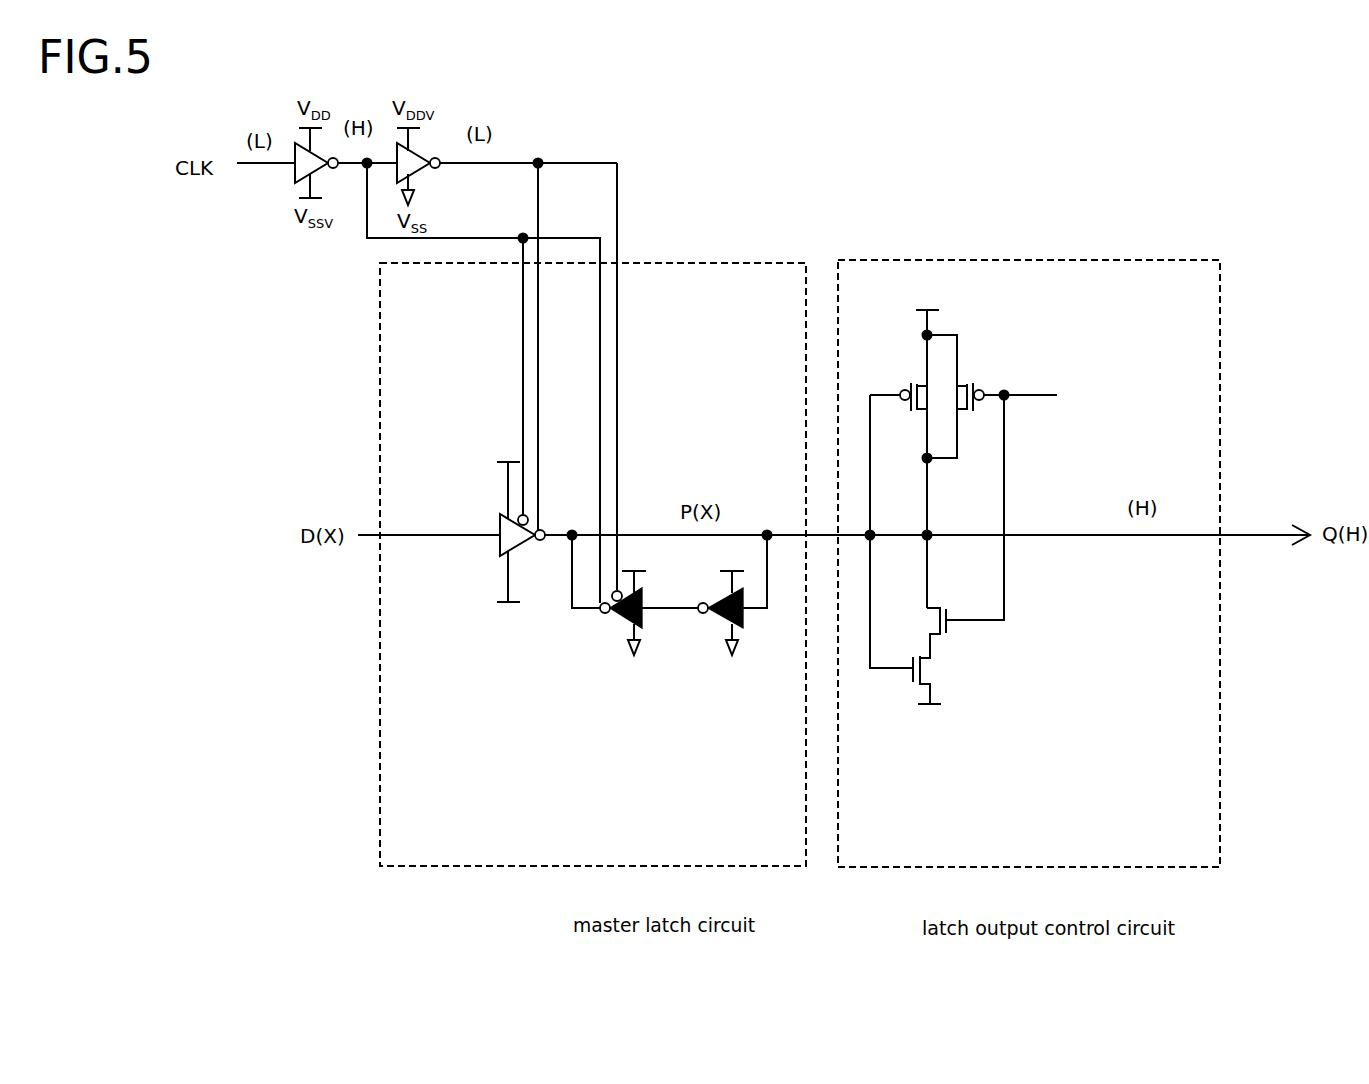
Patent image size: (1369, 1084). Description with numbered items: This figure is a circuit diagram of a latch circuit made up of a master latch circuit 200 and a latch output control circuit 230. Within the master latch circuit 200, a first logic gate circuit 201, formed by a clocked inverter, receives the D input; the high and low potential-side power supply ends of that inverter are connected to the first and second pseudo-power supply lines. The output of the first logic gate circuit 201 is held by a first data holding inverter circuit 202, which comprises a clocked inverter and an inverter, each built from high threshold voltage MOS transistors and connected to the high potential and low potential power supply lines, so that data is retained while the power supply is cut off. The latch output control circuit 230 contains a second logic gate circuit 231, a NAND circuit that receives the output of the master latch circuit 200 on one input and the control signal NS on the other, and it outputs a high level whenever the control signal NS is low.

The master latch circuit 200 is at (637, 866).
The first logic gate circuit 201 is at (470, 455).
The first data holding inverter circuit 202 is at (683, 692).
The latch output control circuit 230 is at (1042, 867).
The second logic gate circuit 231 is at (990, 717).